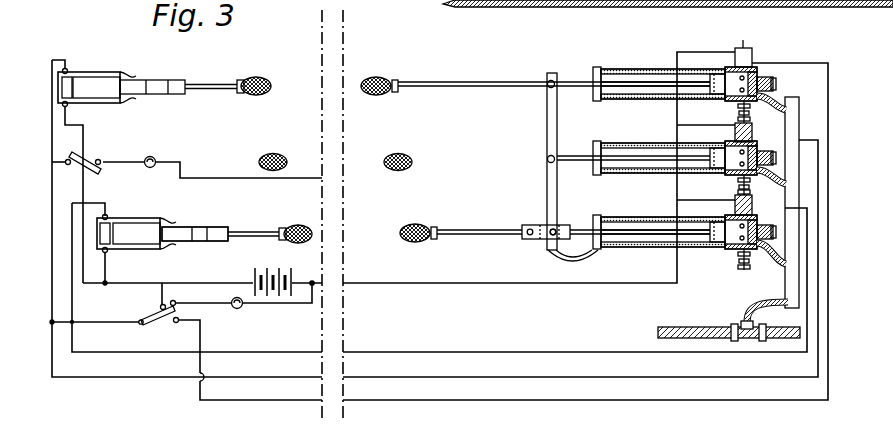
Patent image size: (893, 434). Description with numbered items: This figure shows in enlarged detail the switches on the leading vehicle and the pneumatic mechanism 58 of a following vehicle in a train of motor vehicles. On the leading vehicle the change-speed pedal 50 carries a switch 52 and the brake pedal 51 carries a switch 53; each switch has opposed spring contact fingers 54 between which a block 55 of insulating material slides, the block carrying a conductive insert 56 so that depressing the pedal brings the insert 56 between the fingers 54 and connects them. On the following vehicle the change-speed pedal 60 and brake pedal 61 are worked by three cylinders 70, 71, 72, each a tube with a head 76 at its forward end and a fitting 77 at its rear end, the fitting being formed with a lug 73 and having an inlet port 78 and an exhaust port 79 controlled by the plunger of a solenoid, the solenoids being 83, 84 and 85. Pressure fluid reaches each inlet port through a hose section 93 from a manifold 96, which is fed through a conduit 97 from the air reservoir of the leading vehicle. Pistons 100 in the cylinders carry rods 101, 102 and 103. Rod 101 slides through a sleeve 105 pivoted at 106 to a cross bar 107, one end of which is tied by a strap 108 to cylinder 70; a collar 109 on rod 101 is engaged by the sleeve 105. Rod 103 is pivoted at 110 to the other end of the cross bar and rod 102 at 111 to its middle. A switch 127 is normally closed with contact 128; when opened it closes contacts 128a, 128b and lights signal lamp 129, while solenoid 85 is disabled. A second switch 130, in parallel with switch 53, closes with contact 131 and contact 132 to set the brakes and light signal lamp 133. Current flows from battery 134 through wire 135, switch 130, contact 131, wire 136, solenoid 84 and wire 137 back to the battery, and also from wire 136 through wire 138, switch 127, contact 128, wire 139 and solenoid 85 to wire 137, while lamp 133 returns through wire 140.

The change-speed pedal 50 is at (296, 225).
The brake pedal 51 is at (254, 78).
The switch 52 is at (128, 234).
The switch 53 is at (97, 88).
The spring contact fingers 54 is at (160, 218).
The block 55 is at (185, 226).
The insert 56 is at (160, 93).
The pneumatic mechanism 58 is at (496, 161).
The change-speed pedal 60 is at (424, 225).
The brake pedal 61 is at (385, 78).
The cylinder 70 is at (630, 217).
The cylinder 71 is at (640, 150).
The cylinder 72 is at (640, 70).
The lug 73 is at (778, 83).
The head 76 is at (593, 172).
The fitting 77 is at (762, 67).
The inlet port 78 is at (738, 92).
The exhaust port 79 is at (735, 52).
The solenoid 83 is at (754, 205).
The solenoid 84 is at (754, 130).
The solenoid 85 is at (752, 50).
The hose section 93 is at (799, 102).
The manifold 96 is at (799, 127).
The conduit 97 is at (689, 327).
The piston 100 is at (716, 74).
The rod 101 is at (657, 246).
The rod 102 is at (652, 170).
The rod 103 is at (657, 92).
The sleeve 105 is at (544, 223).
The pivotal connection 106 is at (535, 240).
The cross bar 107 is at (547, 175).
The strap 108 is at (580, 258).
The collar 109 is at (520, 230).
The pivot 110 is at (551, 80).
The pivot 111 is at (556, 155).
The switch 127 is at (156, 323).
The contact 128 is at (176, 323).
The contact 128a is at (142, 296).
The contact 128b is at (183, 300).
The signal lamp 129 is at (240, 318).
The switch 130 is at (84, 150).
The contact 131 is at (76, 168).
The contact 132 is at (104, 160).
The signal lamp 133 is at (157, 158).
The battery 134 is at (266, 268).
The wire 135 is at (128, 283).
The wire 136 is at (62, 306).
The wire 137 is at (375, 283).
The wire 138 is at (94, 331).
The wire 139 is at (203, 337).
The wire 140 is at (226, 178).